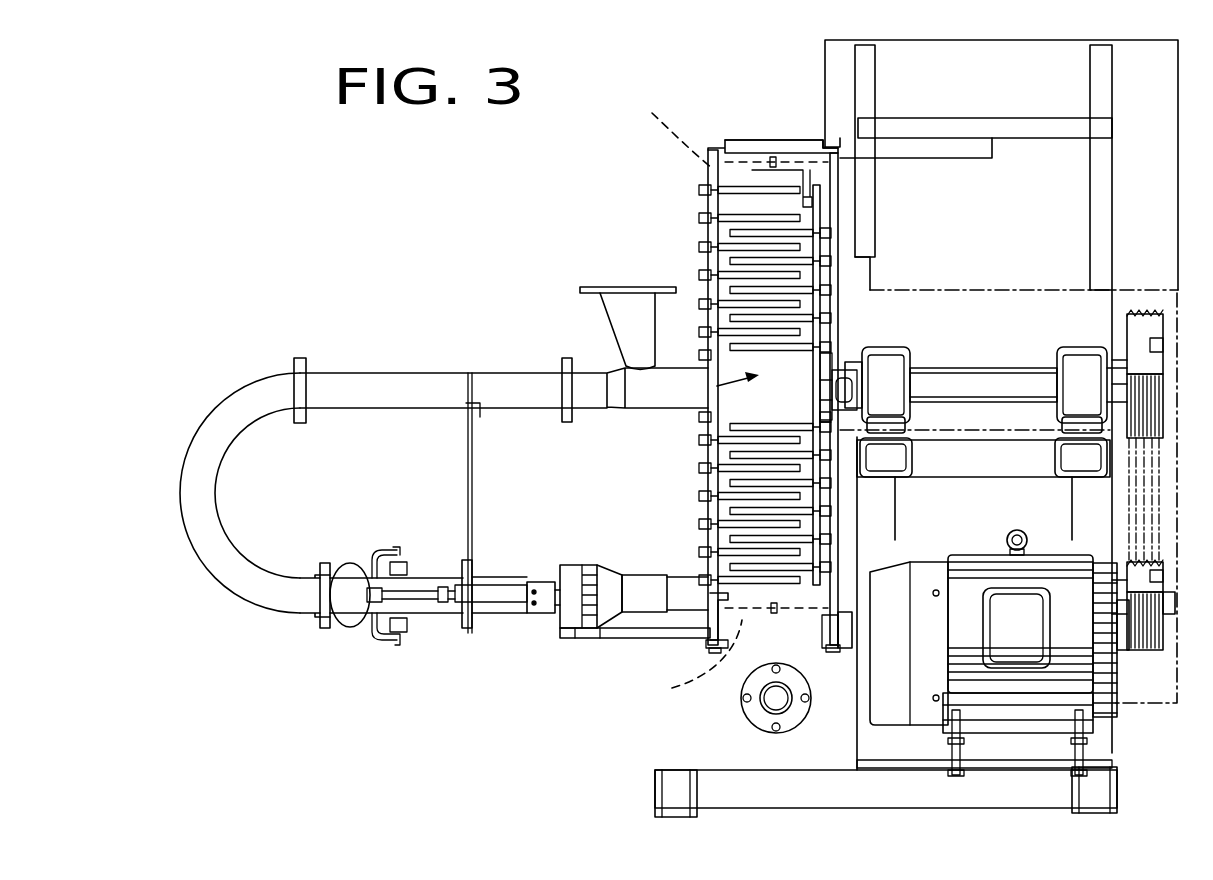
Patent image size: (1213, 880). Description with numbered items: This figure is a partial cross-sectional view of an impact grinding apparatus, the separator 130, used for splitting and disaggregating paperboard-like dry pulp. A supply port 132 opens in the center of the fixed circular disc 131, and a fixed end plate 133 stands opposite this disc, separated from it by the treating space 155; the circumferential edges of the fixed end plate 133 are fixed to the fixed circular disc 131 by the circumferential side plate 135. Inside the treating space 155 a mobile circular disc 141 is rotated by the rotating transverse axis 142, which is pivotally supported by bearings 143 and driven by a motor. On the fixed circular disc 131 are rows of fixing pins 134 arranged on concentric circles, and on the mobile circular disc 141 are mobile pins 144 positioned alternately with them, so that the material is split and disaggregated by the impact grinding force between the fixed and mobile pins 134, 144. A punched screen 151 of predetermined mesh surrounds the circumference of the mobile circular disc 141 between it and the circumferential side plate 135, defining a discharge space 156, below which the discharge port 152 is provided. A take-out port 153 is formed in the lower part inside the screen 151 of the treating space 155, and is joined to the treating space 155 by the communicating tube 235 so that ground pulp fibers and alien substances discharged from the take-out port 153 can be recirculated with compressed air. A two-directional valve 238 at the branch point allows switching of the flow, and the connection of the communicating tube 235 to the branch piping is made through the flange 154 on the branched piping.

The separator 130 is at (686, 95).
The fixed circular disc 131 is at (708, 272).
The port 132 is at (622, 328).
The fixed end plate 133 is at (840, 204).
The fixing pins 134 is at (745, 492).
The circumferential side plate 135 is at (783, 140).
The mobile circular disc 141 is at (832, 498).
The rotating transverse axis 142 is at (982, 380).
The bearing 143 is at (885, 365).
The mobile pins 144 is at (748, 420).
The screen 151 is at (671, 407).
The discharge port 152 is at (770, 700).
The take-out port 153 is at (725, 602).
The flange 154 is at (350, 630).
The treating space 155 is at (760, 388).
The discharge space 156 is at (758, 157).
The communicating tube 235 is at (368, 373).
The two-directional valve 238 is at (553, 580).